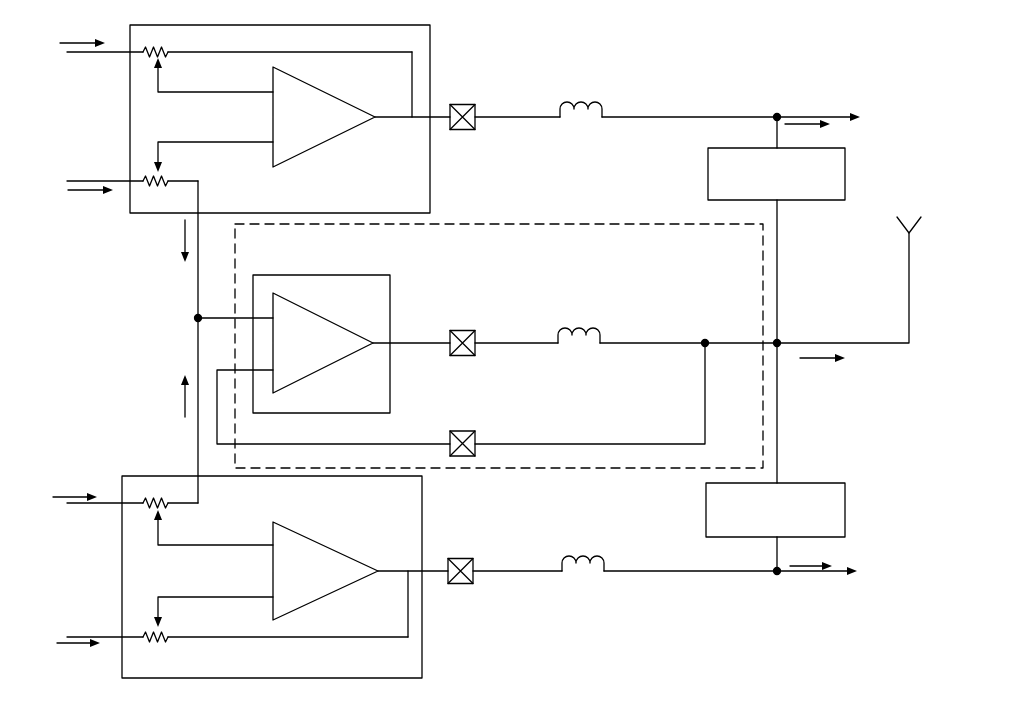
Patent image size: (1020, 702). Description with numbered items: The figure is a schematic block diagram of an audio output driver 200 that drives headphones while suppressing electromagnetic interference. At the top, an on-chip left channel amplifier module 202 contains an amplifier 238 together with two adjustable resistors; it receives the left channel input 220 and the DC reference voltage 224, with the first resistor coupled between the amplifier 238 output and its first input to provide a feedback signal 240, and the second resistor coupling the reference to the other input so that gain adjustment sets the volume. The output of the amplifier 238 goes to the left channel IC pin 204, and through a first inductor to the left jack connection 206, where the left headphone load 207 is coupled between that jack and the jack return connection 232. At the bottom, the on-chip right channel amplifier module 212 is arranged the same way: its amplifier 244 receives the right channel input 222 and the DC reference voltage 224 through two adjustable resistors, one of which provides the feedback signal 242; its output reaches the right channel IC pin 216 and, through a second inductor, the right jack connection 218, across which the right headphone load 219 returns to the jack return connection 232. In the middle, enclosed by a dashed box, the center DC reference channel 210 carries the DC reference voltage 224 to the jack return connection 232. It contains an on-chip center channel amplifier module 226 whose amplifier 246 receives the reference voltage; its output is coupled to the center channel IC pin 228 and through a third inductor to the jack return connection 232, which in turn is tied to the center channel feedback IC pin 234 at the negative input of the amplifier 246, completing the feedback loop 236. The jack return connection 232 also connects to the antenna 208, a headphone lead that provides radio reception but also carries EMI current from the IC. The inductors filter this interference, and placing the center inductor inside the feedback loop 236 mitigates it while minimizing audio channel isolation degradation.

The audio output driver 200 is at (467, 350).
The on-chip left channel amplifier module 202 is at (280, 119).
The left channel IC pin 204 is at (494, 83).
The left jack connection 206 is at (745, 109).
The left headphone load 207 is at (776, 300).
The antenna 208 is at (907, 254).
The center DC reference channel 210 is at (499, 337).
The on-chip right channel amplifier module 212 is at (272, 577).
The right channel IC pin 216 is at (494, 605).
The right jack connection 218 is at (737, 582).
The right headphone load 219 is at (775, 527).
The left channel input 220 is at (225, 115).
The right channel input 222 is at (210, 573).
The DC reference voltage 224 is at (198, 318).
The on-chip center channel amplifier module 226 is at (320, 323).
The center channel IC pin 228 is at (491, 309).
The jack return connection 232 is at (754, 306).
The center channel feedback IC pin 234 is at (465, 431).
The feedback loop 236 is at (463, 392).
The amplifier 238 is at (324, 117).
The feedback signal 240 is at (213, 115).
The feedback signal 242 is at (213, 573).
The amplifier 244 is at (325, 571).
The amplifier 246 is at (323, 343).